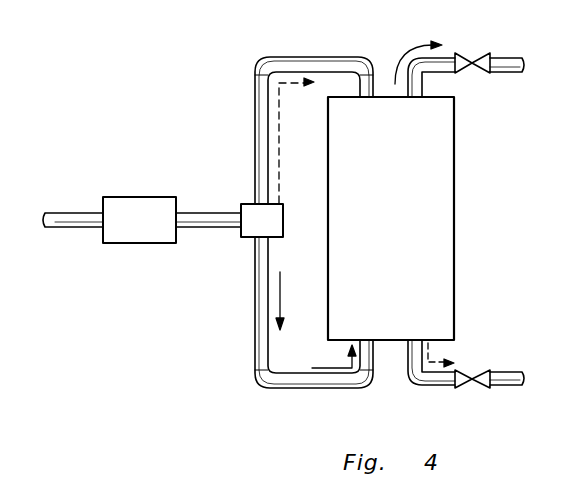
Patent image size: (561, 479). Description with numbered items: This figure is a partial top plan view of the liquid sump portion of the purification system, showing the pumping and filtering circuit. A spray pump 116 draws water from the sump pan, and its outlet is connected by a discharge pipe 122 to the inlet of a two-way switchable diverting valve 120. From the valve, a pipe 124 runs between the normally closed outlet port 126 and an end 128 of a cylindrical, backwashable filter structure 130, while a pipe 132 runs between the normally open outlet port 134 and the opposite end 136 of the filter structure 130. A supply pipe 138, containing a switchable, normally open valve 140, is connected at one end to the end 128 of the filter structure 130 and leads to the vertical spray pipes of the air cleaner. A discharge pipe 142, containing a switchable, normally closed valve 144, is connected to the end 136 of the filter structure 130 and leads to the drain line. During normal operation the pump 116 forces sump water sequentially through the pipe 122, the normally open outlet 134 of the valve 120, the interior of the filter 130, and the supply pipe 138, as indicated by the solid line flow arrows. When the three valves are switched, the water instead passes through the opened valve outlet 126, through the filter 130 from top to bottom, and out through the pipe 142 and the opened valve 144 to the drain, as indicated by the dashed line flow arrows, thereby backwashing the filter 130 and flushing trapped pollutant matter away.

The spray pump 116 is at (133, 197).
The two-way switchable diverting valve 120 is at (241, 202).
The discharge pipe 122 is at (202, 228).
The pipe 124 is at (255, 125).
The normally closed outlet port 126 is at (277, 202).
The end of filter structure 128 is at (450, 77).
The cylindrical backwashable filter structure 130 is at (455, 218).
The pipe 132 is at (255, 310).
The normally open outlet port 134 is at (273, 237).
The opposite end of filter structure 136 is at (448, 357).
The supply pipe 138 is at (447, 57).
The switchable normally open valve 140 is at (490, 55).
The discharge pipe 142 is at (436, 388).
The switchable normally closed valve 144 is at (480, 388).